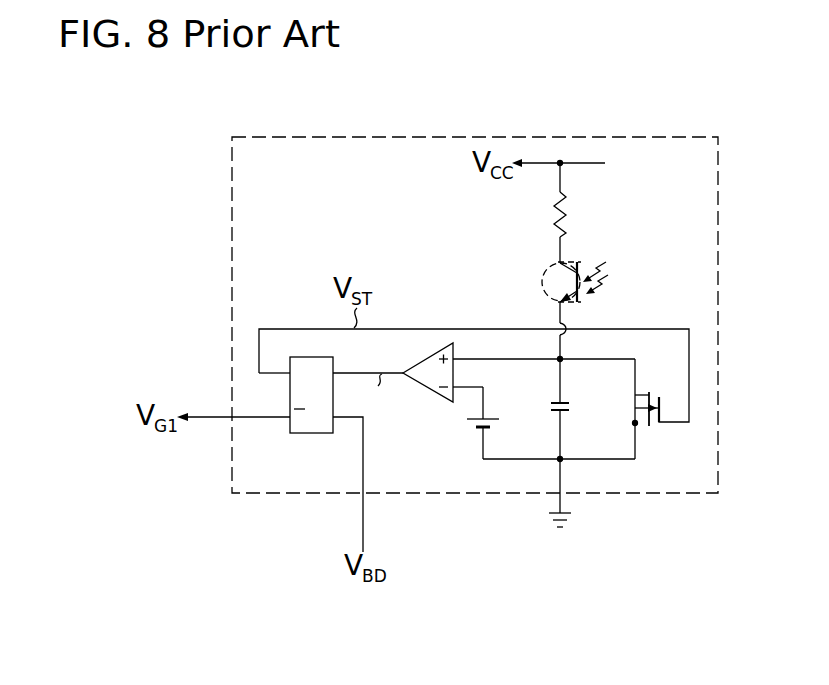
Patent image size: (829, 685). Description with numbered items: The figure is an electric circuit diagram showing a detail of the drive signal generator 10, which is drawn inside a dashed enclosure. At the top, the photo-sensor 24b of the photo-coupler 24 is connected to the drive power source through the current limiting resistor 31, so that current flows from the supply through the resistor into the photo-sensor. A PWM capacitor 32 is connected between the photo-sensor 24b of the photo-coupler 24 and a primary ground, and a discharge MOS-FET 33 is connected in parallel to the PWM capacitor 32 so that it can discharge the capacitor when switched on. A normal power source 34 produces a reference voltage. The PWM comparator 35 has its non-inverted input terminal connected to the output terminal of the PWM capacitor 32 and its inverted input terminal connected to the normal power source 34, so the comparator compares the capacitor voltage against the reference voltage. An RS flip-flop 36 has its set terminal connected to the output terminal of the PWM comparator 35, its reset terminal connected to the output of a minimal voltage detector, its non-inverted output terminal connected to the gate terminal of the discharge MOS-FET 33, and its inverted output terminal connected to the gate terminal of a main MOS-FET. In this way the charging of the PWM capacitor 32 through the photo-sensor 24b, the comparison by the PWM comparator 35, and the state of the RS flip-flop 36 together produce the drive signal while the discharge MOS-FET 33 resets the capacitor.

The drive signal generator 10 is at (472, 135).
The current limiting resistor 31 is at (553, 215).
The photo-coupler 24 is at (572, 259).
The photo-sensor 24b is at (546, 281).
The PWM comparator 35 is at (428, 356).
The PWM capacitor 32 is at (552, 400).
The discharge MOS-FET 33 is at (652, 392).
The normal power source 34 is at (473, 424).
The RS flip-flop 36 is at (312, 436).